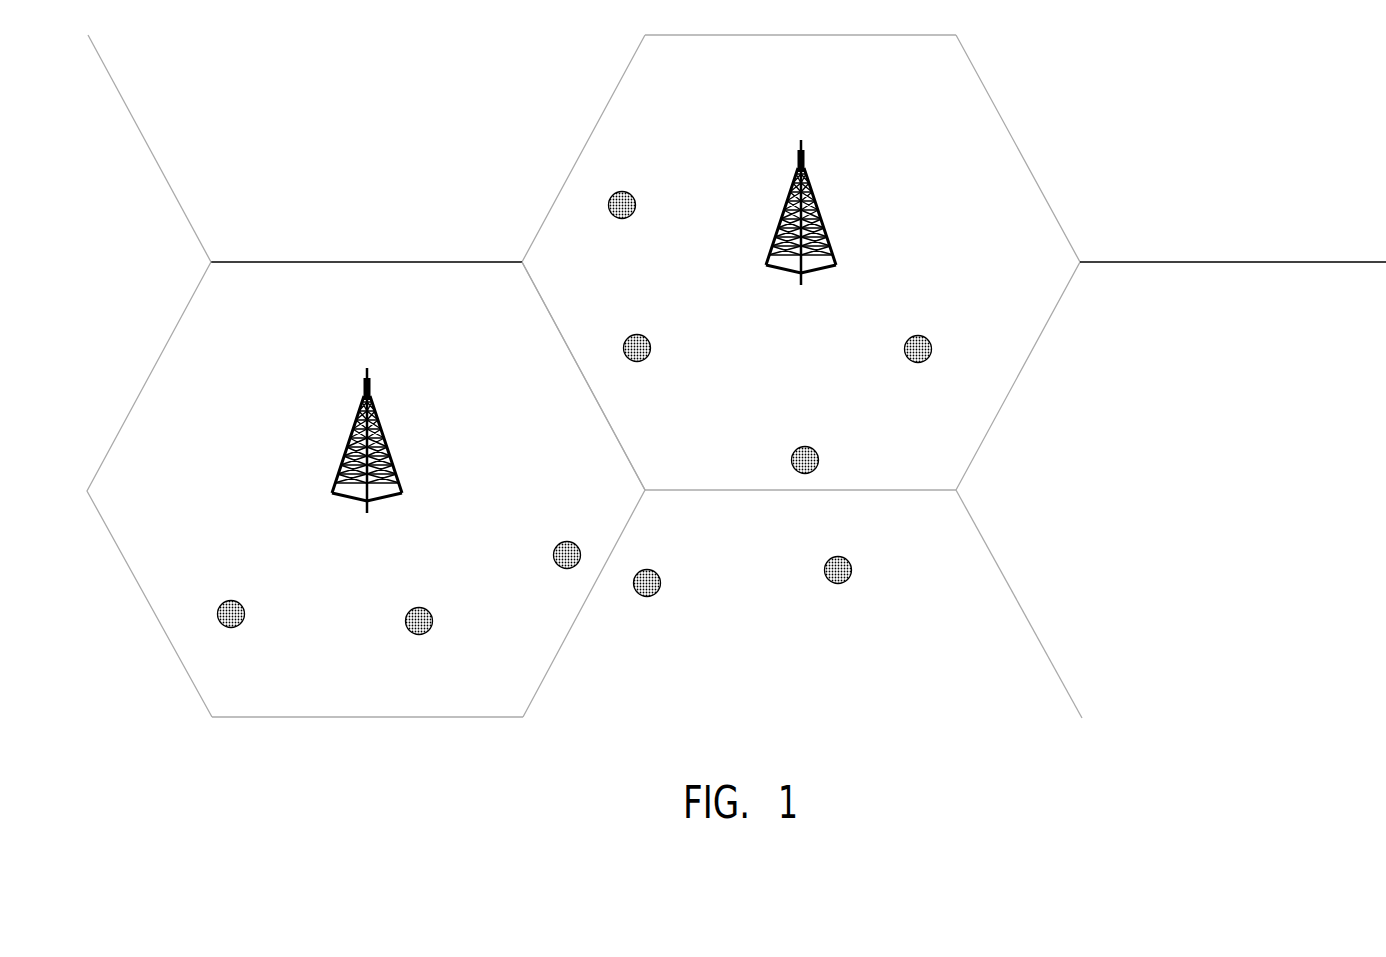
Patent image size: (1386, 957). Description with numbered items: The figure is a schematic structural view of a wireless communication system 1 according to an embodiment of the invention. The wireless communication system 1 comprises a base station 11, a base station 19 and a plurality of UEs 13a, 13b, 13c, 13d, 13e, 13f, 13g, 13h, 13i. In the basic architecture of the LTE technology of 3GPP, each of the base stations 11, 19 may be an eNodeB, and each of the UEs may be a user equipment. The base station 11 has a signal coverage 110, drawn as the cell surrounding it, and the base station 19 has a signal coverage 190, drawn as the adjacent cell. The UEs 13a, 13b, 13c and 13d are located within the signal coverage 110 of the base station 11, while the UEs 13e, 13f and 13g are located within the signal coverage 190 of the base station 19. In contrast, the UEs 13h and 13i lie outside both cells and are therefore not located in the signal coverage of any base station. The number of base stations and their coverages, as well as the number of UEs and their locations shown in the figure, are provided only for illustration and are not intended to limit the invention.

The wireless communication system 1 is at (1162, 108).
The base station 11 is at (806, 168).
The base station 19 is at (372, 396).
The signal coverage 110 is at (700, 75).
The signal coverage 190 is at (265, 303).
The UE 13a is at (918, 349).
The UE 13b is at (805, 460).
The UE 13c is at (637, 348).
The UE 13d is at (622, 205).
The UE 13e is at (567, 555).
The UE 13f is at (419, 621).
The UE 13g is at (231, 614).
The UE 13h is at (838, 570).
The UE 13i is at (647, 583).